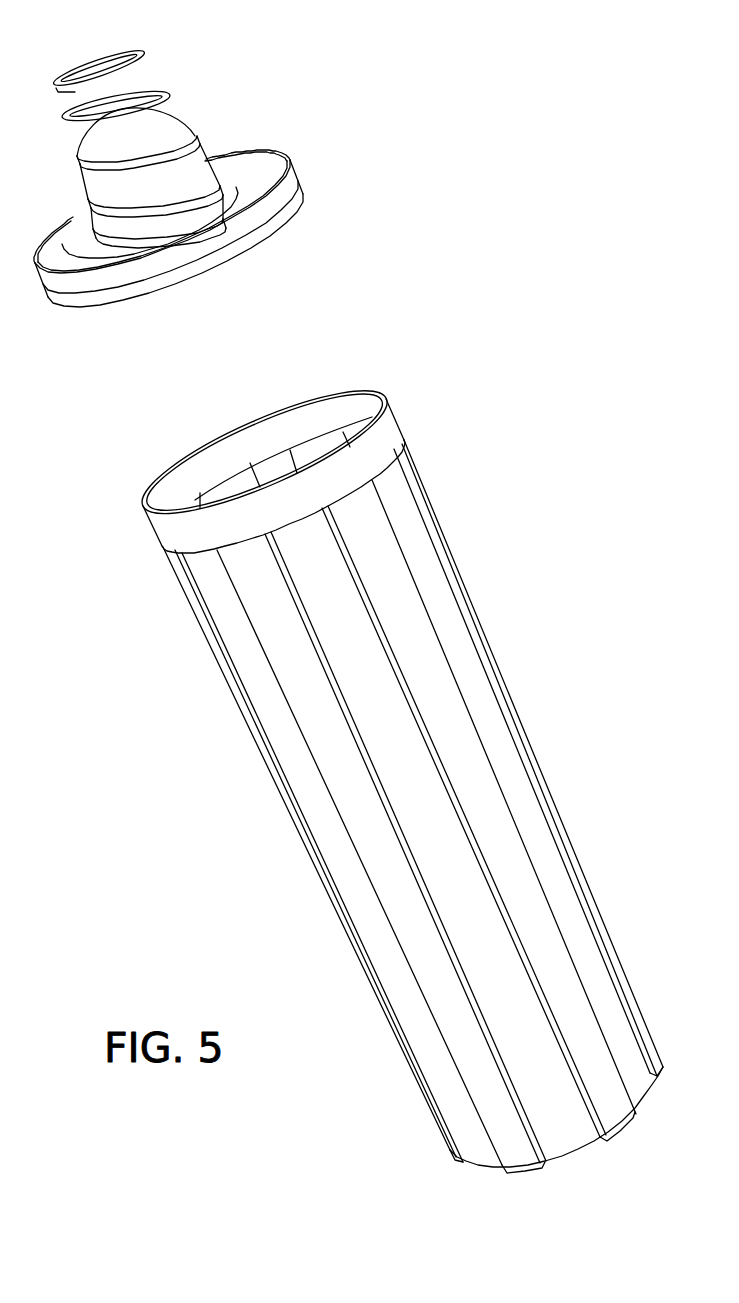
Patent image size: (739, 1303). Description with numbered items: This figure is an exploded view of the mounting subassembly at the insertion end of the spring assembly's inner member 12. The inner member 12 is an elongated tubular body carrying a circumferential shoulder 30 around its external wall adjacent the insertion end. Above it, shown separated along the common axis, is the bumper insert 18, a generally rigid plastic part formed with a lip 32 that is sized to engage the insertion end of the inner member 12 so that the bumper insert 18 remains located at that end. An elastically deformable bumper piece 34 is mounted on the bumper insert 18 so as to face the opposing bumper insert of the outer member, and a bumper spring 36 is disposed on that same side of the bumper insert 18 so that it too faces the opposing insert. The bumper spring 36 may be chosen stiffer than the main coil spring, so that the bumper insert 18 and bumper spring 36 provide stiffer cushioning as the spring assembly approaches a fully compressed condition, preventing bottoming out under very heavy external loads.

The inner member 12 is at (408, 750).
The bumper insert 18 is at (304, 193).
The circumferential shoulder 30 is at (385, 395).
The lip 32 is at (290, 162).
The bumper piece 34 is at (177, 126).
The bumper spring 36 is at (122, 76).